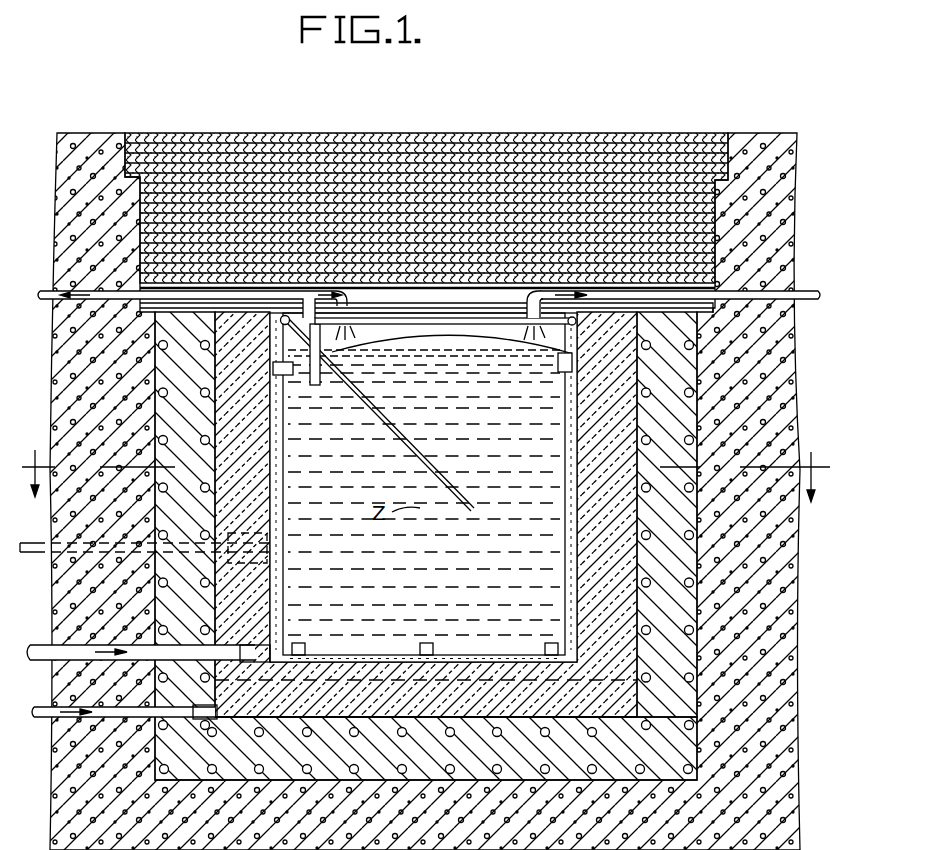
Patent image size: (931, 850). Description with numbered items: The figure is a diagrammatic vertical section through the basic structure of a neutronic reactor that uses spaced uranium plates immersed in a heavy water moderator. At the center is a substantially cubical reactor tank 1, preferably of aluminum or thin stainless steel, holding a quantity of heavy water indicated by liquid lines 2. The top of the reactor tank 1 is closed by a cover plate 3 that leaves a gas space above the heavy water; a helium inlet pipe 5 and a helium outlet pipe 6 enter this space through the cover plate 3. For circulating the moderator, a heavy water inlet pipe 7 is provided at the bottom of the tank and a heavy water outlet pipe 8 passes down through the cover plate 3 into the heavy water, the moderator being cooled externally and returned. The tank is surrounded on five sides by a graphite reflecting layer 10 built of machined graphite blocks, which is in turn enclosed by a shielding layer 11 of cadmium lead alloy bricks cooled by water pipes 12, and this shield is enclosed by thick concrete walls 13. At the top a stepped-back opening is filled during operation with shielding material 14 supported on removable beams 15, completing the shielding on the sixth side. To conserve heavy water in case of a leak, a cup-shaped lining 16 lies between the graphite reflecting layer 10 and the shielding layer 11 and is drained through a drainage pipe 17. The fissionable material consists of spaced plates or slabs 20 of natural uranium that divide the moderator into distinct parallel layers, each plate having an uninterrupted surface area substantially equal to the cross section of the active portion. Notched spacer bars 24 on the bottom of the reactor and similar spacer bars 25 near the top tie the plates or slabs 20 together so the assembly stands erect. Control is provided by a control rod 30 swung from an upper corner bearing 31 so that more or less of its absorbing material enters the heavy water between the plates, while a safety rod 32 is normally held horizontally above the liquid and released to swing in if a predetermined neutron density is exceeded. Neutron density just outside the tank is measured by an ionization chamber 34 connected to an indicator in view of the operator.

The reactor tank 1 is at (572, 572).
The liquid lines 2 is at (426, 464).
The cover plate 3 is at (527, 309).
The helium inlet pipe 5 is at (343, 288).
The helium outlet pipe 6 is at (806, 291).
The heavy water inlet pipe 7 is at (46, 661).
The heavy water outlet pipe 8 is at (46, 291).
The graphite reflecting layer 10 is at (620, 600).
The shielding layer 11 is at (688, 405).
The water pipes 12 is at (695, 443).
The concrete walls 13 is at (757, 625).
The shielding material 14 is at (690, 140).
The beams 15 is at (440, 295).
The cup-shaped lining 16 is at (637, 708).
The drainage pipe 17 is at (50, 719).
The plates or slabs 20 is at (567, 528).
The spacer bars 24 is at (322, 648).
The spacer bars 25 is at (451, 340).
The control rod 30 is at (400, 441).
The upper corner bearing 31 is at (290, 314).
The safety rod 32 is at (408, 318).
The ionization chamber 34 is at (282, 545).